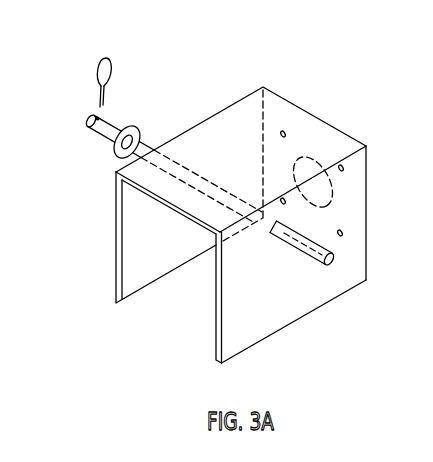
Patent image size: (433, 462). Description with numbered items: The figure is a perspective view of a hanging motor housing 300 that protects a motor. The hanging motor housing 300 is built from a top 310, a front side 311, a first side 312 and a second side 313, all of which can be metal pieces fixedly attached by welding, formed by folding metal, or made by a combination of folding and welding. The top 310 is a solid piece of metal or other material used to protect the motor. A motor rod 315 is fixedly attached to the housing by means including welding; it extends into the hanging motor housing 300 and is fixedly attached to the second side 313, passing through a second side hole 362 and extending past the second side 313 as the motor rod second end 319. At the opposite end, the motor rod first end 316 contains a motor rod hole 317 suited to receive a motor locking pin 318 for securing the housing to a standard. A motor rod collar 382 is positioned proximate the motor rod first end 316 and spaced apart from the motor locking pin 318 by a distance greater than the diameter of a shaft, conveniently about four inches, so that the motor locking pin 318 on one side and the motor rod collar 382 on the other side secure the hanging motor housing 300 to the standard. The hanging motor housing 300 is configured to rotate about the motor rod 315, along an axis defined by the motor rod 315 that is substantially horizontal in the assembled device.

The hanging motor housing 300 is at (296, 49).
The top 310 is at (286, 112).
The front side 311 is at (371, 172).
The first side 312 is at (130, 280).
The second side 313 is at (281, 297).
The motor rod 315 is at (136, 139).
The motor rod first end 316 is at (90, 132).
The motor rod hole 317 is at (96, 117).
The motor locking pin 318 is at (109, 60).
The motor rod second end 319 is at (322, 232).
The second side hole 362 is at (265, 226).
The motor rod collar 382 is at (115, 160).